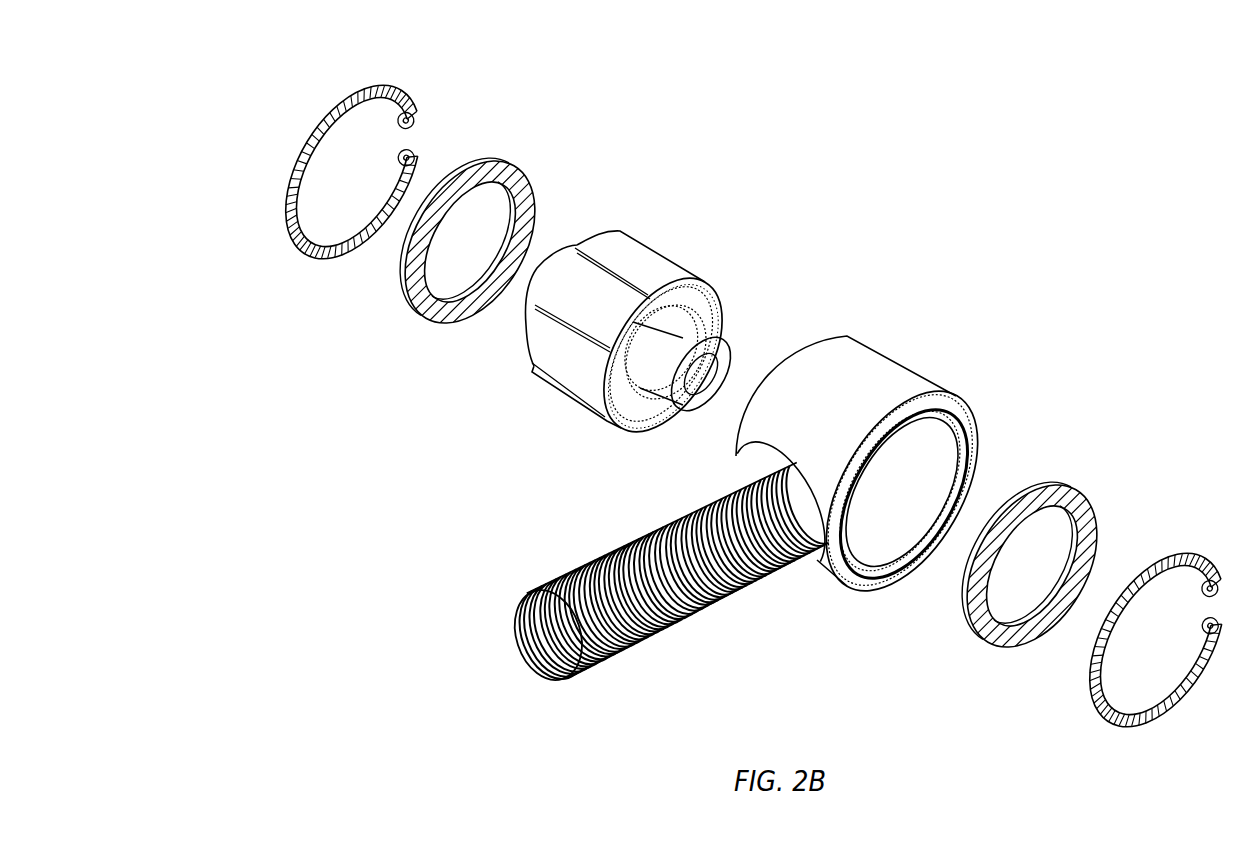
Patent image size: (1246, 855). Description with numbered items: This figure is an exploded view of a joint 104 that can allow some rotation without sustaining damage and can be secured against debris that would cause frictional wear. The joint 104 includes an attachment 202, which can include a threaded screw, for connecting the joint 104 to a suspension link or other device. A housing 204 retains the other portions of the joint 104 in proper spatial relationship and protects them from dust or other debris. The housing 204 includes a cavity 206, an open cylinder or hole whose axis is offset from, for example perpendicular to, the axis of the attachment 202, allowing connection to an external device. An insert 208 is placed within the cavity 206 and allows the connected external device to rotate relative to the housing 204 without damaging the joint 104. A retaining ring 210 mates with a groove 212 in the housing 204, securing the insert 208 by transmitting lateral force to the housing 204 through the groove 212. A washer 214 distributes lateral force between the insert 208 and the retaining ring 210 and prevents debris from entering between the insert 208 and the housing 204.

The joint 104 is at (287, 62).
The attachment 202 is at (590, 568).
The housing 204 is at (867, 375).
The cavity 206 is at (897, 520).
The insert 208 is at (630, 262).
The retaining ring 210 is at (1203, 553).
The groove 212 is at (963, 480).
The washer 214 is at (1088, 507).